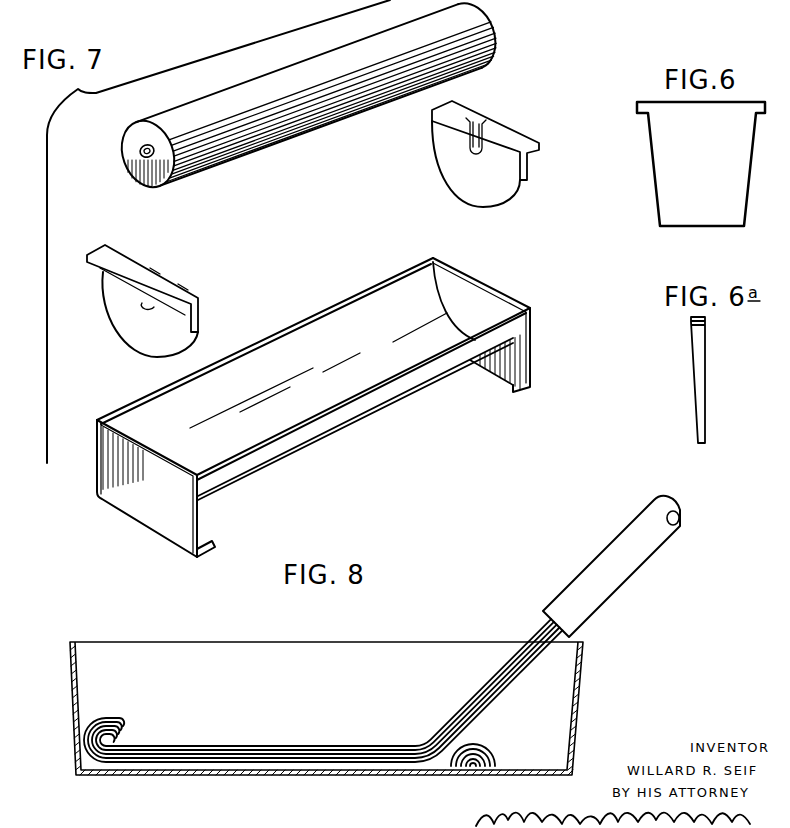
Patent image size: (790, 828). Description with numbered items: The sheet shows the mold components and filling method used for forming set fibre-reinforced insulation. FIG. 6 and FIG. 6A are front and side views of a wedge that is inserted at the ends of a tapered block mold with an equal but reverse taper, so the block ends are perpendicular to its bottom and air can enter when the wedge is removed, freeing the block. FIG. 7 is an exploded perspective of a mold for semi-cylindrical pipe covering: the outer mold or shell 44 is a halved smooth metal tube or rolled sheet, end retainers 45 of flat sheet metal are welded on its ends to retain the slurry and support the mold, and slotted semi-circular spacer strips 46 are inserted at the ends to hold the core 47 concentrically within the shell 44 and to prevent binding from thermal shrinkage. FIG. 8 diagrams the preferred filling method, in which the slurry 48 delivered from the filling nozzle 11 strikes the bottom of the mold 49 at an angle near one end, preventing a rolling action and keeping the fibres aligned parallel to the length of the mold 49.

In FIG. 8, the filling nozzle 11 is at (607, 587).
In FIG. 7, the outer mold or shell 44 is at (347, 422).
In FIG. 7, the end retainers 45 is at (150, 477).
In FIG. 7, the spacer strips 46 is at (470, 175).
In FIG. 7, the core 47 is at (300, 93).
In FIG. 8, the slurry 48 is at (483, 683).
In FIG. 8, the mold 49 is at (152, 773).